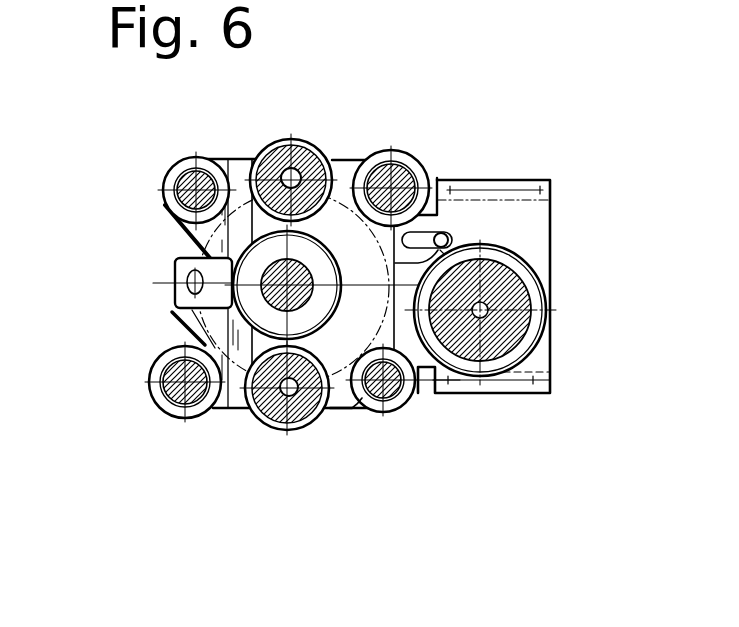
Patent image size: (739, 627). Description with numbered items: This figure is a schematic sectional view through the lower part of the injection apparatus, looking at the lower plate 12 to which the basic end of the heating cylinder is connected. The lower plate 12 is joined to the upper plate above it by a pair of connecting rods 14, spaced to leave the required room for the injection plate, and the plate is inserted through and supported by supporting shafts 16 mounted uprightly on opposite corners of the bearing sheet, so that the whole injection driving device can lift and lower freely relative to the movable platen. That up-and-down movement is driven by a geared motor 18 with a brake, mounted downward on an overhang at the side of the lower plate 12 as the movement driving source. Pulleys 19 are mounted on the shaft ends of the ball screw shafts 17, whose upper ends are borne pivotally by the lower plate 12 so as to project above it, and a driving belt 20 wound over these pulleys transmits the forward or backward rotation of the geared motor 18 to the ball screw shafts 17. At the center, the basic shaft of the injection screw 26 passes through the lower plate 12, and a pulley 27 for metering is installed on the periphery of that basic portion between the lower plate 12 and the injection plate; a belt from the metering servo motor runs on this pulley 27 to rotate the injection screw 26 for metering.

The lower plate 12 is at (230, 165).
The connecting rods 14 is at (168, 167).
The supporting shafts 16 is at (425, 172).
The ball screw shafts 17 is at (293, 165).
The geared motor 18 is at (530, 283).
The pulleys 19 is at (335, 158).
The driving belt 20 is at (350, 408).
The injection screw 26 is at (200, 305).
The pulley for metering 27 is at (213, 242).